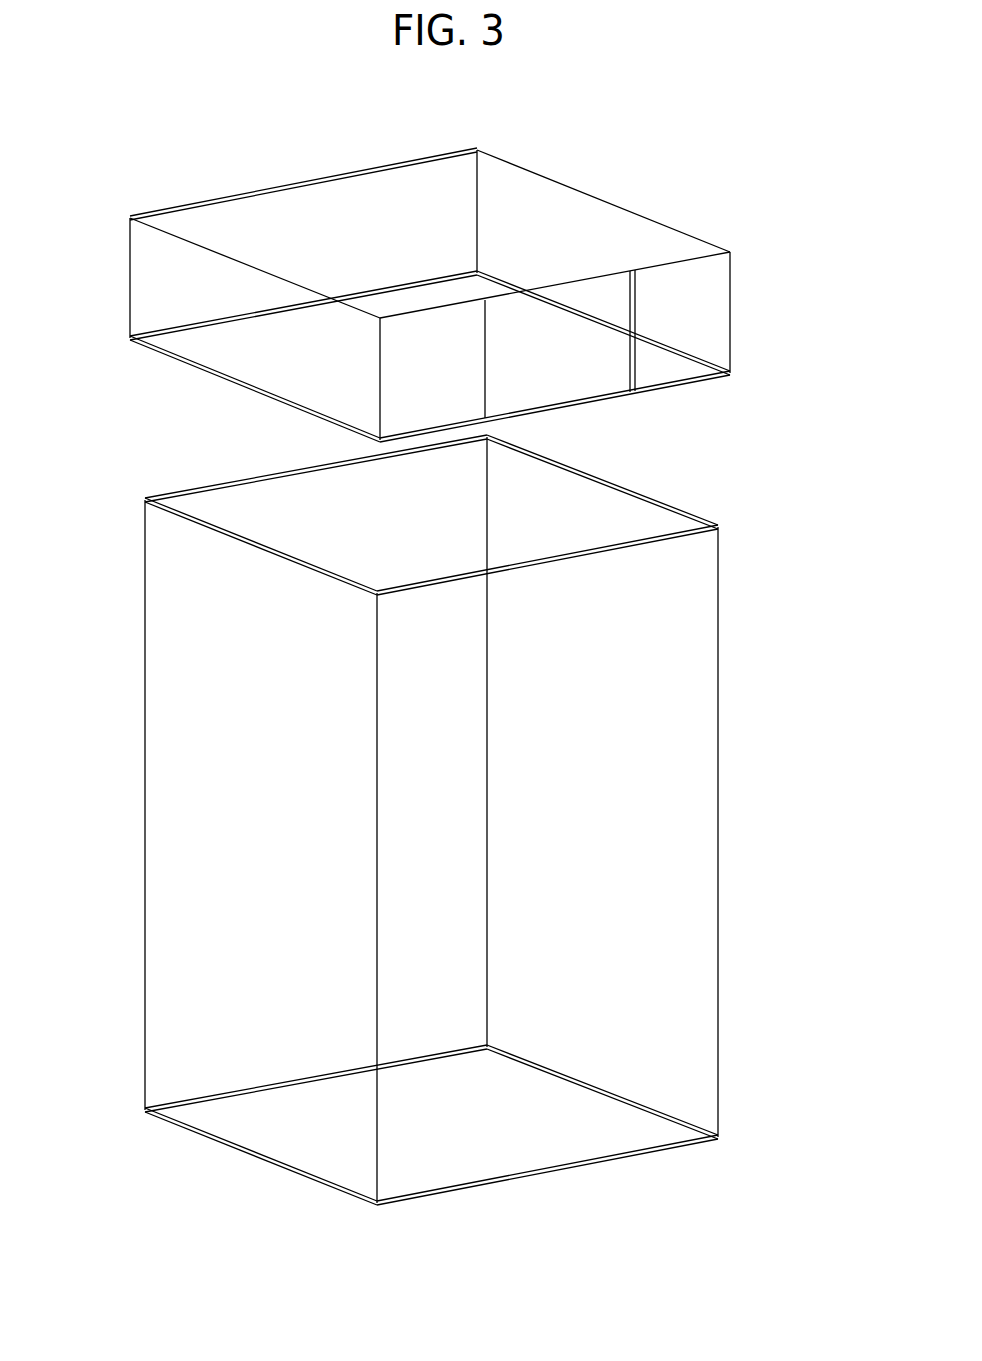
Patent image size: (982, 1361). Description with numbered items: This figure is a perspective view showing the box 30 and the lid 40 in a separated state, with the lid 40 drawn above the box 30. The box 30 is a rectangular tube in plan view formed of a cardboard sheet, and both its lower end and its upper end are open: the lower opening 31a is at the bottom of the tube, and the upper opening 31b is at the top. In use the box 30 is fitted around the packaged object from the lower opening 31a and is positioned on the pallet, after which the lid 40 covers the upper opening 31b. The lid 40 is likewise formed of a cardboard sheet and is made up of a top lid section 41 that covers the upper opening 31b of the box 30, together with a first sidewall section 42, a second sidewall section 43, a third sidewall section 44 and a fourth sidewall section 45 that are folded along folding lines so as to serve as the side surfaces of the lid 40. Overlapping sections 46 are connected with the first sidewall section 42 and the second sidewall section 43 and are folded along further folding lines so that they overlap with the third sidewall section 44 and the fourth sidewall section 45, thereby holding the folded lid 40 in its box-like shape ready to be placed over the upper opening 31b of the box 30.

The box 30 is at (481, 833).
The lower opening 31a is at (517, 1130).
The upper opening 31b is at (580, 530).
The lid 40 is at (434, 283).
The top lid section 41 is at (450, 237).
The first sidewall section 42 is at (235, 338).
The second sidewall section 43 is at (583, 247).
The third sidewall section 44 is at (550, 348).
The fourth sidewall section 45 is at (340, 230).
The overlapping sections 46 is at (417, 395).